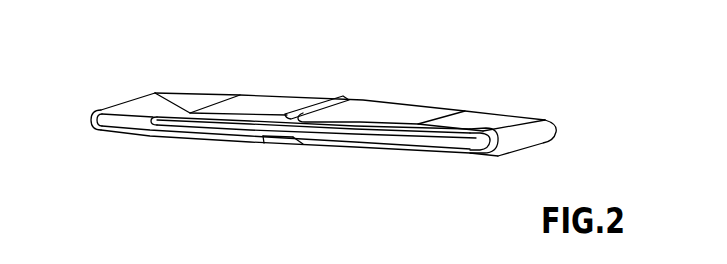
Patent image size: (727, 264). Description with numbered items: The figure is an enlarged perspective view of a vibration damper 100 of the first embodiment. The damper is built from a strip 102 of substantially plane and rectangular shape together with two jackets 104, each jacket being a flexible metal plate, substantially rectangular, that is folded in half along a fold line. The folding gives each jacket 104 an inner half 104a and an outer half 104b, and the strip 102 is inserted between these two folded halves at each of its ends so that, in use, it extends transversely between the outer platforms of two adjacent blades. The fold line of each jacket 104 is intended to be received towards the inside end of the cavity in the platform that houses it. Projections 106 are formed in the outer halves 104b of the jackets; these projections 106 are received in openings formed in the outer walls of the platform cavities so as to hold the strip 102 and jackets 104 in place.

The vibration damper 100 is at (335, 129).
The strip 102 is at (250, 161).
The jacket 104 is at (112, 102).
The inner half 104a is at (177, 139).
The outer half 104b is at (268, 105).
The projection 106 is at (193, 102).